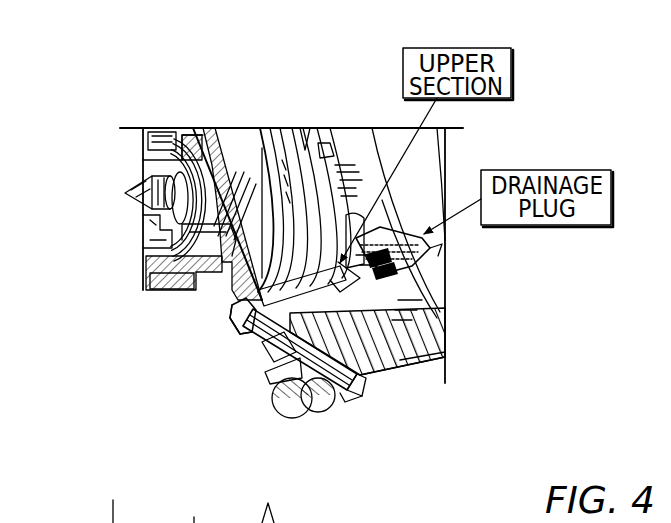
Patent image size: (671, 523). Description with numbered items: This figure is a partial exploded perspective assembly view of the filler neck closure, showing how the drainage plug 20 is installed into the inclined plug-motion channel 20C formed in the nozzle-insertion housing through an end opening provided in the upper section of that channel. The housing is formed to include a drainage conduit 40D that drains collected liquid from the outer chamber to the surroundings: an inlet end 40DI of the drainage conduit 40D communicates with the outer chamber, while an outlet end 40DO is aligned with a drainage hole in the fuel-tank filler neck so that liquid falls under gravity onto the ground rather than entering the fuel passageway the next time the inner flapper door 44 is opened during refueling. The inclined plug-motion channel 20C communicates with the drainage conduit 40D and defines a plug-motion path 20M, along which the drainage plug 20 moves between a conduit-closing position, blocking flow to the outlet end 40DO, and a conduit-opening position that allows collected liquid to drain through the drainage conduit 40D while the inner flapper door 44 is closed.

The drainage plug 20 is at (567, 170).
The inclined plug-motion channel 20C is at (391, 20).
The plug-motion path 20M is at (240, 366).
The inner flapper door 44 is at (203, 28).
The drainage conduit 40D is at (559, 336).
The inlet end of drainage conduit 40DI is at (250, 335).
The outlet end of drainage conduit 40DO is at (352, 383).